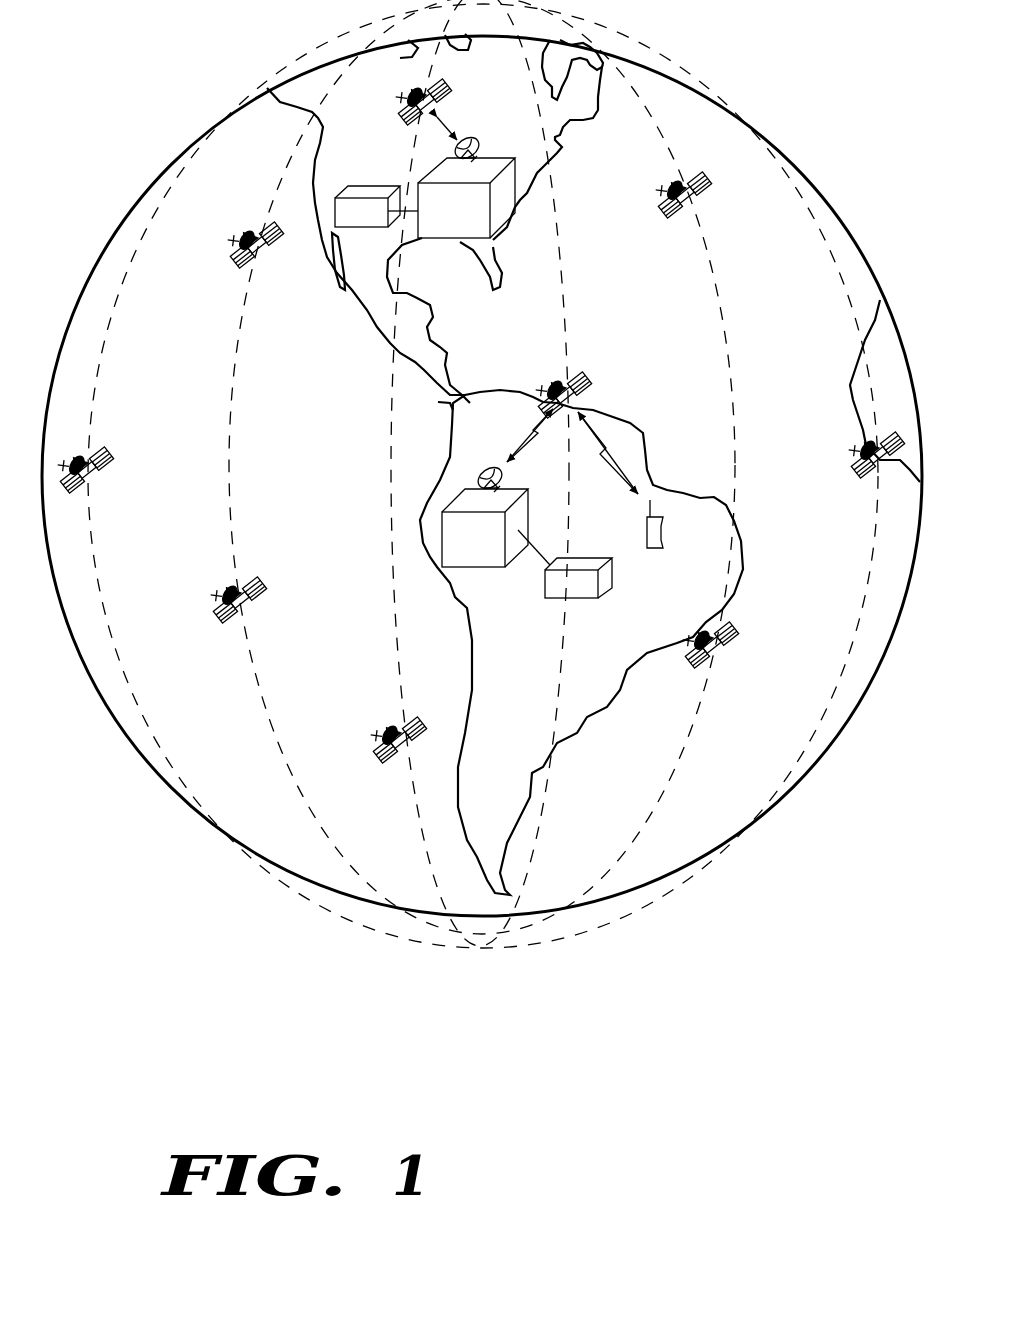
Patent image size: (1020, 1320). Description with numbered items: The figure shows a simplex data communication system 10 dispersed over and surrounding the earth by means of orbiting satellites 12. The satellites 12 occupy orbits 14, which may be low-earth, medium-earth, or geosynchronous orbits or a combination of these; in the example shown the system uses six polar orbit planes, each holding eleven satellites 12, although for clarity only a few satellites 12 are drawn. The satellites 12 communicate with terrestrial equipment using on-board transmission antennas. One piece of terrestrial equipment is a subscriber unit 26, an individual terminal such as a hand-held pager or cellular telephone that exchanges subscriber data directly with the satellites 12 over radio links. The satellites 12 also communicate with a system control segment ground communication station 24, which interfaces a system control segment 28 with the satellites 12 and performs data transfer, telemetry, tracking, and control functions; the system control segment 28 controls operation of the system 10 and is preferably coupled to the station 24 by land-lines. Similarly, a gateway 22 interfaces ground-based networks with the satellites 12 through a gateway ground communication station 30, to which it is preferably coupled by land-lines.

The simplex data communication system 10 is at (472, 1048).
The satellites 12 is at (394, 110).
The orbits 14 is at (287, 171).
The gateway 22 is at (583, 600).
The system control segment ground communication station 24 is at (500, 158).
The subscriber unit 26 is at (655, 548).
The system control segment 28 is at (367, 189).
The gateway ground communication station 30 is at (483, 568).